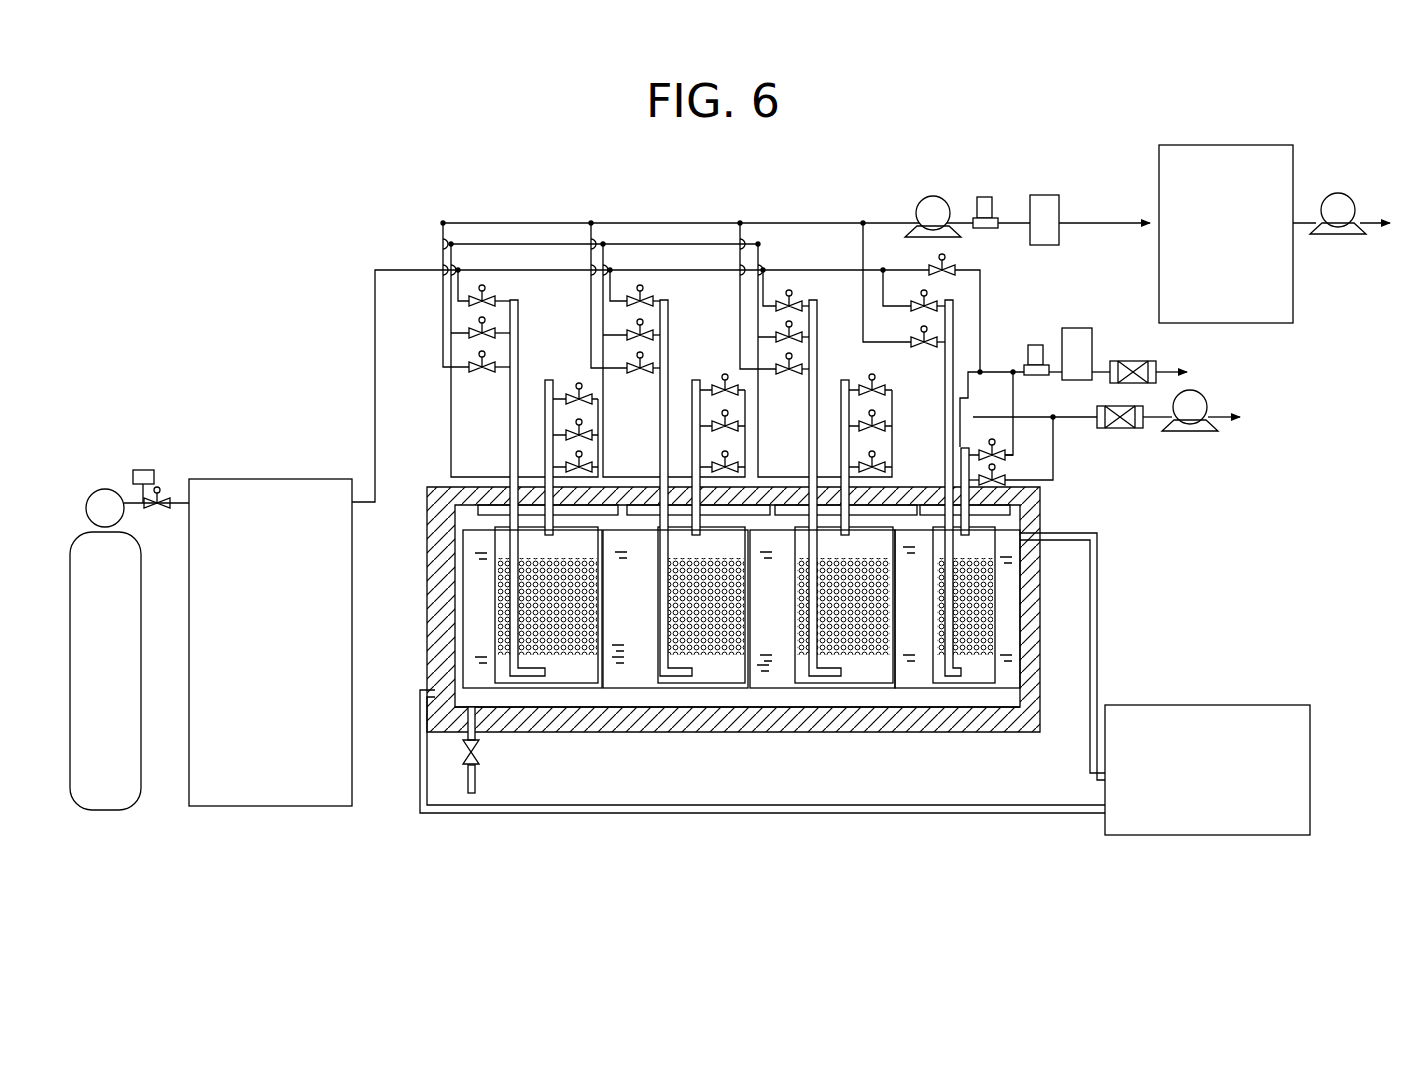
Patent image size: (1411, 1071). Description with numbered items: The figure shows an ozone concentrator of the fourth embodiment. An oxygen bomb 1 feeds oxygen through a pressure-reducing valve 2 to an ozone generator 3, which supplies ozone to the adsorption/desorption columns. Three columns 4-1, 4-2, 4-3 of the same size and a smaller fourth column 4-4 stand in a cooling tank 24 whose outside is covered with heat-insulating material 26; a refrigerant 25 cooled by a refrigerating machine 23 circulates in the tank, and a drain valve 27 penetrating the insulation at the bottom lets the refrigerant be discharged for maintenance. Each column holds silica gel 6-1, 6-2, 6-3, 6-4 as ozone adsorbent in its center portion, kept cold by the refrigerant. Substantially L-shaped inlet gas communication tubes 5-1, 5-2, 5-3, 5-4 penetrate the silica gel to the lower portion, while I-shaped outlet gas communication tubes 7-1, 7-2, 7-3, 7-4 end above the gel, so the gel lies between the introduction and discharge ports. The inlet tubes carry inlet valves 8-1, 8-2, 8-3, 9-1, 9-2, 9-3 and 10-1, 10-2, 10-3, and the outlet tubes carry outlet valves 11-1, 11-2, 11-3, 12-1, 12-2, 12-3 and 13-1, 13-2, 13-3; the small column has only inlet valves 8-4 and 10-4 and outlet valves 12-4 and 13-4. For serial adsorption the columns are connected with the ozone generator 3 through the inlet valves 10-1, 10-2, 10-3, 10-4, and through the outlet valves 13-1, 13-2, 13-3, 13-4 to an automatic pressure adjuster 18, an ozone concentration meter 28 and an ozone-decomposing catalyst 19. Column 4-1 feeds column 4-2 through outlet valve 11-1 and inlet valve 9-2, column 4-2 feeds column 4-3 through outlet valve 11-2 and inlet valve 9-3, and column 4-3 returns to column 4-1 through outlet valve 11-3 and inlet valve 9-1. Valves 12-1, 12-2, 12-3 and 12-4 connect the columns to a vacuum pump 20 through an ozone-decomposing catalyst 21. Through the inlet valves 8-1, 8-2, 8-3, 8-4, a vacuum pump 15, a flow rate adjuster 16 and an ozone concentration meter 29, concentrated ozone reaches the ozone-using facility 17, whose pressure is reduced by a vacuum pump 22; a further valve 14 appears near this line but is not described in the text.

The oxygen bomb 1 is at (100, 570).
The pressure-reducing valve 2 is at (130, 486).
The ozone generator 3 is at (247, 506).
The adsorption/desorption column 4-1 is at (467, 682).
The adsorption/desorption column 4-2 is at (690, 690).
The adsorption/desorption column 4-3 is at (900, 690).
The adsorption/desorption column 4-4 is at (960, 690).
The inlet gas communication tube 5-1 is at (519, 302).
The inlet gas communication tube 5-2 is at (668, 676).
The inlet gas communication tube 5-3 is at (815, 676).
The inlet gas communication tube 5-4 is at (950, 676).
The silica gel 6-1 is at (585, 665).
The silica gel 6-2 is at (740, 660).
The silica gel 6-3 is at (870, 660).
The silica gel 6-4 is at (985, 655).
The outlet gas communication tube 7-1 is at (545, 482).
The outlet gas communication tube 7-2 is at (692, 400).
The outlet gas communication tube 7-3 is at (842, 400).
The outlet gas communication tube 7-4 is at (970, 452).
The inlet valve 8-1 is at (482, 376).
The inlet valve 8-2 is at (630, 369).
The inlet valve 8-3 is at (797, 370).
The inlet valve 8-4 is at (917, 345).
The inlet valve 9-1 is at (469, 336).
The inlet valve 9-2 is at (650, 337).
The inlet valve 9-3 is at (797, 338).
The inlet valve 10-1 is at (469, 304).
The inlet valve 10-2 is at (648, 302).
The inlet valve 10-3 is at (797, 305).
The inlet valve 10-4 is at (917, 302).
The outlet valve 11-1 is at (592, 465).
The outlet valve 11-2 is at (738, 467).
The outlet valve 11-3 is at (878, 467).
The outlet valve 12-1 is at (592, 433).
The outlet valve 12-2 is at (738, 426).
The outlet valve 12-3 is at (878, 427).
The outlet valve 12-4 is at (1005, 477).
The outlet valve 13-1 is at (576, 394).
The outlet valve 13-2 is at (720, 382).
The outlet valve 13-3 is at (878, 390).
The outlet valve 13-4 is at (1005, 452).
The valve 14 is at (950, 268).
The vacuum pump 15 is at (930, 200).
The flow rate adjuster (mass-flow controller) 16 is at (983, 197).
The ozone-using facility 17 is at (1248, 160).
The automatic pressure adjuster 18 is at (1032, 345).
The ozone-decomposing catalyst 19 is at (1133, 361).
The vacuum pump 20 is at (1190, 420).
The ozone-decomposing catalyst 21 is at (1125, 428).
The vacuum pump 22 is at (1340, 232).
The refrigerating machine 23 is at (1180, 835).
The cooling tank 24 is at (640, 708).
The refrigerant 25 is at (765, 685).
The heat-insulating material 26 is at (812, 708).
The drain valve 27 is at (470, 762).
The ozone concentration meter 28 is at (1077, 328).
The ozone concentration meter 29 is at (1040, 195).